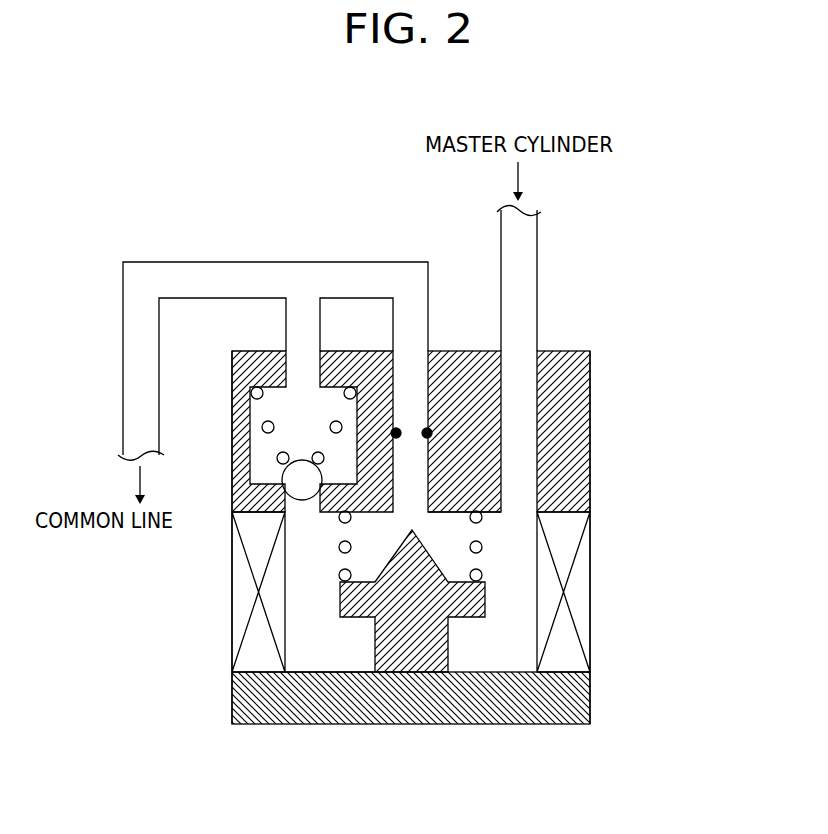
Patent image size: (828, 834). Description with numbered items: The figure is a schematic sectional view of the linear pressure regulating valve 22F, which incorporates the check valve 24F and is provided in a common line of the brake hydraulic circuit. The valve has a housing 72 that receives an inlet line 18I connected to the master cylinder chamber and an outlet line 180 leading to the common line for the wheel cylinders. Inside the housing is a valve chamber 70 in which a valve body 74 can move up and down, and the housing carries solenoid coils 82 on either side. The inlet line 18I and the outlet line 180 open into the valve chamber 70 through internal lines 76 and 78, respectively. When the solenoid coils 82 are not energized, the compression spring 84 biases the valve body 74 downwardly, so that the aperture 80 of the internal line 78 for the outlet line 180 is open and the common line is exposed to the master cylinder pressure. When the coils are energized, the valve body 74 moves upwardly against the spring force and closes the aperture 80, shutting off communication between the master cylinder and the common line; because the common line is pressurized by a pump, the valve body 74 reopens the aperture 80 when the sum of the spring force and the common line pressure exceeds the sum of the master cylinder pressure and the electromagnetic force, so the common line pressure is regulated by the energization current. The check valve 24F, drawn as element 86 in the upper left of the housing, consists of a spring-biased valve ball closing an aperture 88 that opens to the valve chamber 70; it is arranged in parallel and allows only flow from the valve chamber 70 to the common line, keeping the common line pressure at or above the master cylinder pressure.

The outlet line 180 is at (160, 262).
The check valve 24F is at (331, 350).
The valve body 86 is at (304, 380).
The internal line 78 is at (417, 382).
The inlet line 18I is at (537, 248).
The linear pressure regulating valve 22F is at (606, 366).
The internal line 76 is at (527, 428).
The aperture 80 is at (413, 508).
The compression spring 84 is at (481, 551).
The housing 72 is at (590, 694).
The valve chamber 70 is at (318, 660).
The valve body 74 is at (410, 660).
The solenoid coils 82 is at (235, 608).
The aperture 88 is at (301, 507).